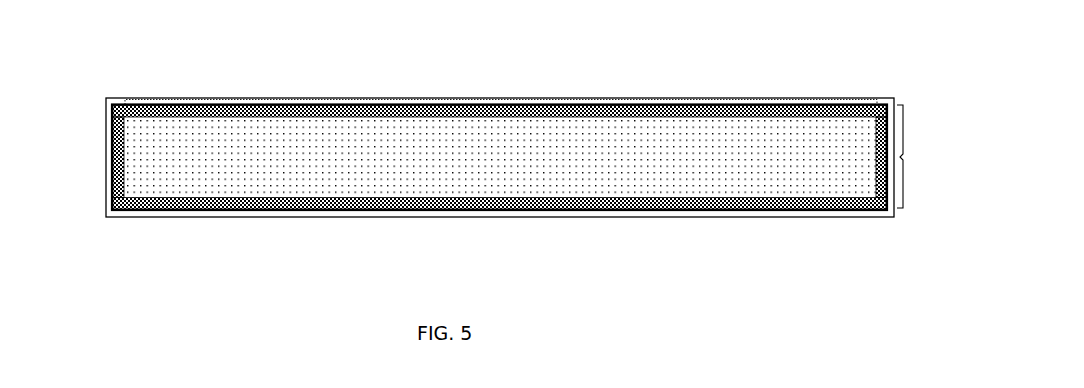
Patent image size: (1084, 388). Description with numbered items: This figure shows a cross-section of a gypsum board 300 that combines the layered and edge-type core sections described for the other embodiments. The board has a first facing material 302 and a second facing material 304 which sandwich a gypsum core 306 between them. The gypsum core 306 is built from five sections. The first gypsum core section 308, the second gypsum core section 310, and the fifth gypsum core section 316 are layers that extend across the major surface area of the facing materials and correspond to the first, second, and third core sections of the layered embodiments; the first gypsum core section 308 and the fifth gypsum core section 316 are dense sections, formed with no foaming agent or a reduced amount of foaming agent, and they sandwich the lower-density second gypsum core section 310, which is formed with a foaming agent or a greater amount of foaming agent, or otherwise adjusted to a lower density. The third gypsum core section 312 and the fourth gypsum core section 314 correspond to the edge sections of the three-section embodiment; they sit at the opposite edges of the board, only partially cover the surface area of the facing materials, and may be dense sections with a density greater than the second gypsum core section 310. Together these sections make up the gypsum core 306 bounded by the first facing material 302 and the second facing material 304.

The gypsum board 300 is at (748, 85).
The first facing material 302 is at (237, 213).
The second facing material 304 is at (582, 100).
The gypsum core 306 is at (906, 157).
The first gypsum core section 308 is at (362, 208).
The second gypsum core section 310 is at (407, 127).
The third gypsum core section 312 is at (110, 203).
The fourth gypsum core section 314 is at (858, 208).
The fifth gypsum core section 316 is at (320, 102).